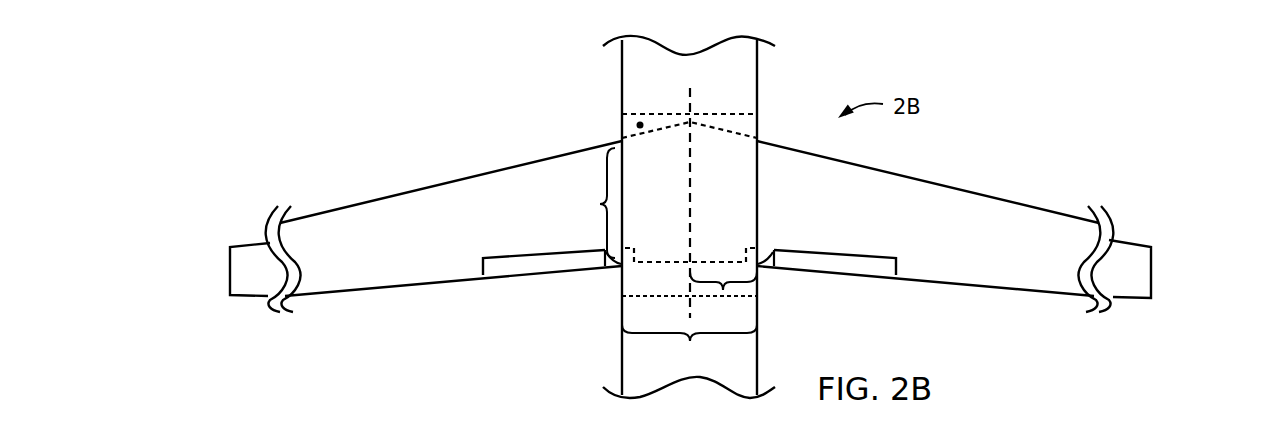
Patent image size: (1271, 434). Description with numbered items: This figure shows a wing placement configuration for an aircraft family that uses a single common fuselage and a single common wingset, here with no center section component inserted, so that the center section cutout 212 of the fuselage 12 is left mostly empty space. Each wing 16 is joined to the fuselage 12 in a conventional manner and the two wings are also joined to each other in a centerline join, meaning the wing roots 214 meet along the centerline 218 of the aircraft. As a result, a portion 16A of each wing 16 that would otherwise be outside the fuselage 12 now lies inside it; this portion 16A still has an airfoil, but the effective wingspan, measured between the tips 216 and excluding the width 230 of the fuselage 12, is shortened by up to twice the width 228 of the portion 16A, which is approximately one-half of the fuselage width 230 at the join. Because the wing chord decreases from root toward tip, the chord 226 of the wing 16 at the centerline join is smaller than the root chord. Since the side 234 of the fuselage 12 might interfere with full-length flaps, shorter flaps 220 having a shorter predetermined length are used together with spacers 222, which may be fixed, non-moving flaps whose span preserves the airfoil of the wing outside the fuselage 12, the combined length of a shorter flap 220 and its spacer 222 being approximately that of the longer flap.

The fuselage 12 is at (655, 390).
The wing 16 is at (325, 251).
The portion of the wing 16A is at (665, 174).
The center section cutout 212 is at (638, 124).
The wing root 214 is at (680, 206).
The tip 216 is at (230, 268).
The centerline 218 is at (702, 95).
The shorter flap 220 is at (520, 276).
The spacer 222 is at (612, 268).
The chord 226 is at (585, 203).
The width of the portion 228 is at (691, 284).
The width of the fuselage 230 is at (689, 334).
The side of the fuselage 234 is at (620, 308).